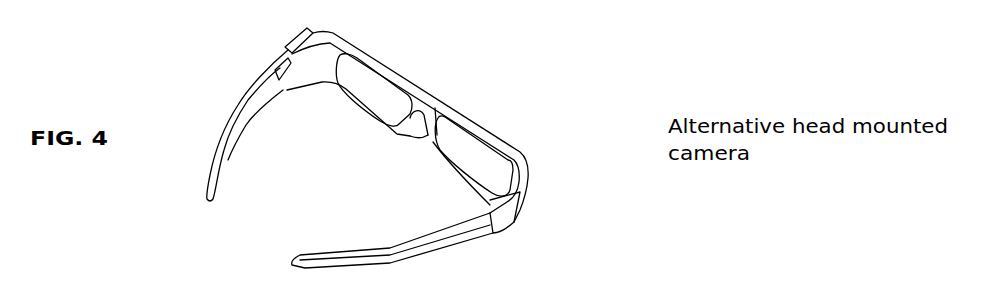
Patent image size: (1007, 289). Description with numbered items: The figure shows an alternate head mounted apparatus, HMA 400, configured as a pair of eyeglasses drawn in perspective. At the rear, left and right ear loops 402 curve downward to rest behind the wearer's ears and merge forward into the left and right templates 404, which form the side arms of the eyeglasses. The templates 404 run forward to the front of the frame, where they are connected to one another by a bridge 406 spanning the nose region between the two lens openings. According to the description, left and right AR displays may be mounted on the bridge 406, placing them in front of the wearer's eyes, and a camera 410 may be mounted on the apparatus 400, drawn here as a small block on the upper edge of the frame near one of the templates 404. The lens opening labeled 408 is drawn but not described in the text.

The HMA 400 is at (553, 100).
The ear loops 402 is at (290, 263).
The templates 404 is at (450, 243).
The bridge 406 is at (418, 110).
The lens 408 is at (463, 163).
The camera 410 is at (283, 48).